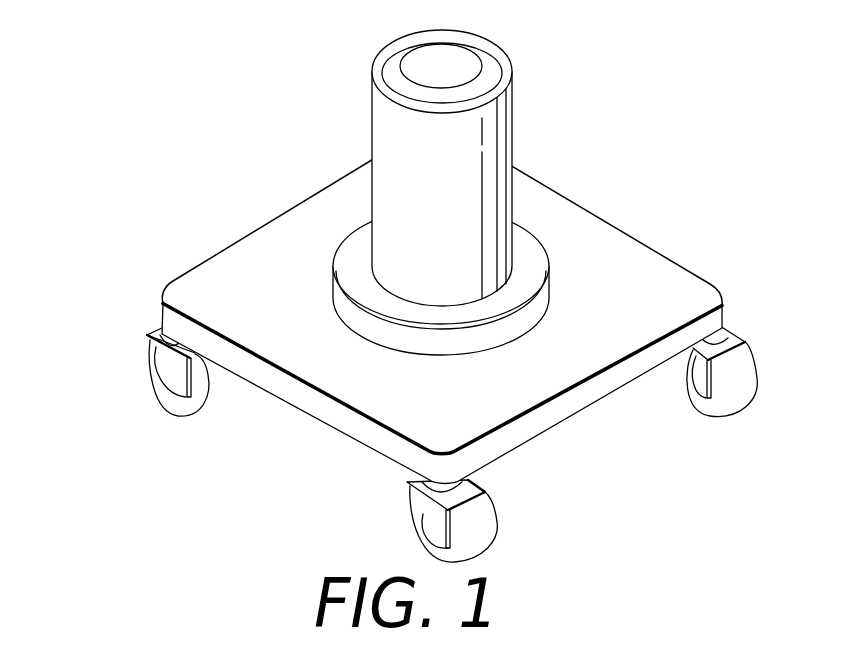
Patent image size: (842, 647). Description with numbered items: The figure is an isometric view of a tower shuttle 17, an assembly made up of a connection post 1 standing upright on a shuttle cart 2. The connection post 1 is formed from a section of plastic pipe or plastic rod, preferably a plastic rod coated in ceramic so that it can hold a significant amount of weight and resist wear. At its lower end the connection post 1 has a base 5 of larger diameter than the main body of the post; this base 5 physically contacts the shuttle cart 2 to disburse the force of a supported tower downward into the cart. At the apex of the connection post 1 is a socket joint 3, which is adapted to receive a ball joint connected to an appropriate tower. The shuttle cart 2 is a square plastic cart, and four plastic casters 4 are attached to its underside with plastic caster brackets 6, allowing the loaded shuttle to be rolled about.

The tower shuttle 17 is at (394, 288).
The connection post 1 is at (383, 143).
The shuttle cart 2 is at (284, 302).
The socket joint 3 is at (469, 65).
The plastic casters 4 is at (490, 503).
The base 5 is at (527, 272).
The plastic caster brackets 6 is at (175, 366).